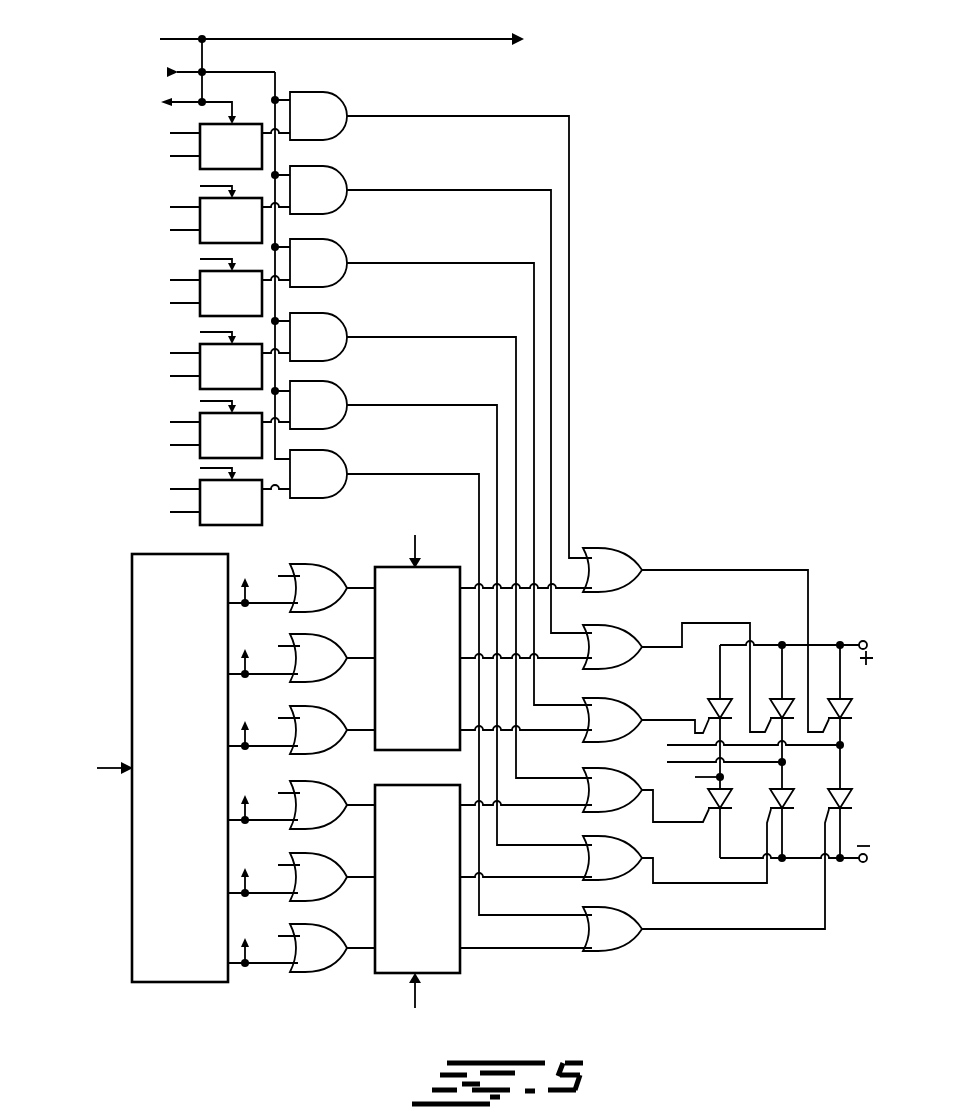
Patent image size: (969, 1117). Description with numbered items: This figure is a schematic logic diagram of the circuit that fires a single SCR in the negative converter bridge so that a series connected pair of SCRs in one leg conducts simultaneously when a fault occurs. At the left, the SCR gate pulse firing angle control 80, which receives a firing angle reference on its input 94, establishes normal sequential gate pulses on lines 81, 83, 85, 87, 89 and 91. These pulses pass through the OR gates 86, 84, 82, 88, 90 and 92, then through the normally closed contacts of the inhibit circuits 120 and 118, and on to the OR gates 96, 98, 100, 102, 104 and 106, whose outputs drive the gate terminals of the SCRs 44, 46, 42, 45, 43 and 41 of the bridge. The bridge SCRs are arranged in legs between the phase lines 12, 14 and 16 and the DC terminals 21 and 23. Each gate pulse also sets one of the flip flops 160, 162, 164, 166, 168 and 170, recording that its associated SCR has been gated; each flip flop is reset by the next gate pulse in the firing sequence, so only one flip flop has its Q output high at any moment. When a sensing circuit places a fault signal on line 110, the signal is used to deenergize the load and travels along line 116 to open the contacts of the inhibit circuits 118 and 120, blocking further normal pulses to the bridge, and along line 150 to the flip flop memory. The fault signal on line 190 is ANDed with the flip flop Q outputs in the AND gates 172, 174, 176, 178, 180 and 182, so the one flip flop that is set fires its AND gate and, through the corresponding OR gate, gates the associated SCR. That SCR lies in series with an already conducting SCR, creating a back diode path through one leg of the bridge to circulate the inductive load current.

The phase line 12 is at (667, 745).
The phase line 14 is at (670, 764).
The phase line 16 is at (697, 780).
The positive DC terminal 21 is at (863, 641).
The negative DC terminal 23 is at (863, 862).
The SCR 41 is at (850, 802).
The SCR 42 is at (712, 706).
The SCR 43 is at (792, 802).
The SCR 44 is at (849, 706).
The SCR 45 is at (730, 802).
The SCR 46 is at (775, 706).
The SCR gate pulse firing angle control 80 is at (148, 554).
The output pulse line 81 is at (170, 133).
The OR gate 82 is at (326, 706).
The output pulse line 83 is at (170, 280).
The OR gate 84 is at (326, 634).
The output pulse line 85 is at (170, 207).
The OR gate 86 is at (326, 564).
The output pulse line 87 is at (170, 230).
The OR gate 88 is at (326, 781).
The output pulse line 89 is at (170, 156).
The OR gate 90 is at (326, 853).
The output pulse line 91 is at (170, 303).
The OR gate 92 is at (326, 924).
The input 94 is at (103, 771).
The OR gate 96 is at (626, 548).
The OR gate 98 is at (626, 625).
The OR gate 100 is at (603, 698).
The OR gate 102 is at (586, 768).
The OR gate 104 is at (586, 836).
The OR gate 106 is at (620, 951).
The fault signal line 110 is at (325, 30).
The fault signal line 116 is at (178, 39).
The inhibit circuit 118 is at (462, 971).
The inhibit circuit 120 is at (446, 567).
The fault signal line 150 is at (223, 102).
The flip flop 160 is at (200, 166).
The flip flop 162 is at (200, 240).
The flip flop 164 is at (200, 313).
The flip flop 166 is at (200, 386).
The flip flop 168 is at (200, 455).
The flip flop 170 is at (262, 519).
The AND gate 172 is at (342, 98).
The AND gate 174 is at (342, 172).
The AND gate 176 is at (342, 245).
The AND gate 178 is at (342, 319).
The AND gate 180 is at (342, 387).
The AND gate 182 is at (342, 456).
The fault signal line 190 is at (234, 72).